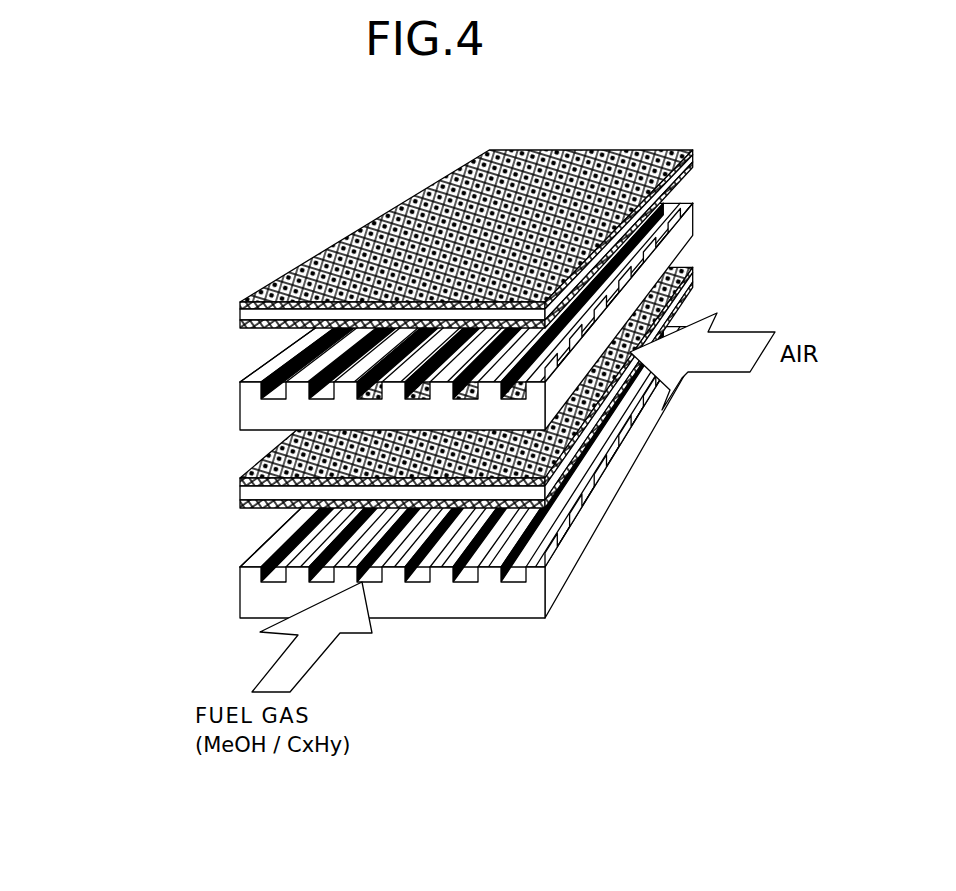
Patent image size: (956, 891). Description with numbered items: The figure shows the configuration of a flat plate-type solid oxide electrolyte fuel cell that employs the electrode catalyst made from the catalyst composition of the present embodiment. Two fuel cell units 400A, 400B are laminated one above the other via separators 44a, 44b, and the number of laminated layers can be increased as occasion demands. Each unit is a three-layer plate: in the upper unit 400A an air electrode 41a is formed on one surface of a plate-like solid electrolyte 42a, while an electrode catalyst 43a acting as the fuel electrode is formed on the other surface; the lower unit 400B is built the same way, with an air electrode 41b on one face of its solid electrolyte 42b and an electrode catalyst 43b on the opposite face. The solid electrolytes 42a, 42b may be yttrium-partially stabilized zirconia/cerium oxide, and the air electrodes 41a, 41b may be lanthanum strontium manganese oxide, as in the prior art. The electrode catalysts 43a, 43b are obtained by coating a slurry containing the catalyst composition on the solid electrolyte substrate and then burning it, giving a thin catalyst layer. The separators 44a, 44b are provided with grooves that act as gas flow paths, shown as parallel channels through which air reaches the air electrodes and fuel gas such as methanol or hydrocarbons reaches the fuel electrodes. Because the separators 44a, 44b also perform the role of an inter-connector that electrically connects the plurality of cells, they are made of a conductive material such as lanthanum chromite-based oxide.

The fuel cell unit 400A is at (362, 264).
The air electrode 41a is at (240, 303).
The solid electrolyte 42a is at (240, 315).
The electrode catalyst 43a is at (240, 326).
The separator 44a is at (240, 410).
The fuel cell unit 400B is at (364, 411).
The air electrode 41b is at (240, 480).
The solid electrolyte 42b is at (240, 492).
The electrode catalyst 43b is at (127, 428).
The separator 44b is at (242, 590).